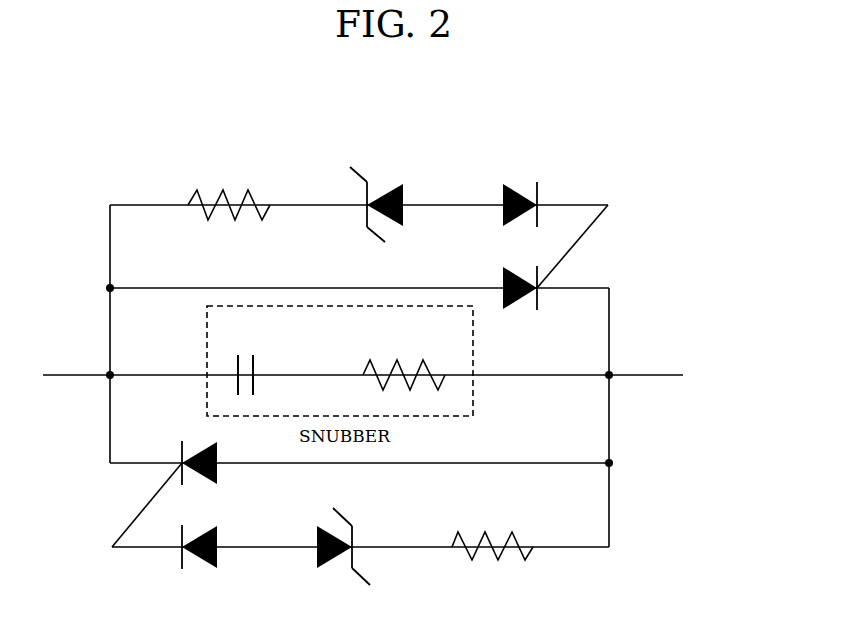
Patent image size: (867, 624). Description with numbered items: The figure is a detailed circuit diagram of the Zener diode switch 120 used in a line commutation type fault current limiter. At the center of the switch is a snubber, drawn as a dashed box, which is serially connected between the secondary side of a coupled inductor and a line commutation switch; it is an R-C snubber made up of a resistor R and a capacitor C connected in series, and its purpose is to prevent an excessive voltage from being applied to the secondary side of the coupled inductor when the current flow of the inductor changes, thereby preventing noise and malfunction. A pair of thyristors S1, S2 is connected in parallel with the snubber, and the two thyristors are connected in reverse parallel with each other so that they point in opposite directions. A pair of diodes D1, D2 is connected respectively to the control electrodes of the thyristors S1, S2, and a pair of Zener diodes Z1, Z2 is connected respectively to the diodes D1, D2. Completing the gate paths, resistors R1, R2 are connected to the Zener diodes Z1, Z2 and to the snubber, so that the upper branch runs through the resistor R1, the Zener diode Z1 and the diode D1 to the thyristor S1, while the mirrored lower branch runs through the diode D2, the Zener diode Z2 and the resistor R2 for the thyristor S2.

The Zener diode switch 120 is at (664, 259).
The resistor R1 is at (229, 189).
The Zener diode Z1 is at (379, 197).
The diode D1 is at (520, 190).
The thyristor S1 is at (505, 279).
The capacitor C is at (245, 360).
The resistor R is at (404, 361).
The thyristor S2 is at (216, 468).
The diode D2 is at (206, 564).
The Zener diode Z2 is at (343, 556).
The resistor R2 is at (492, 567).